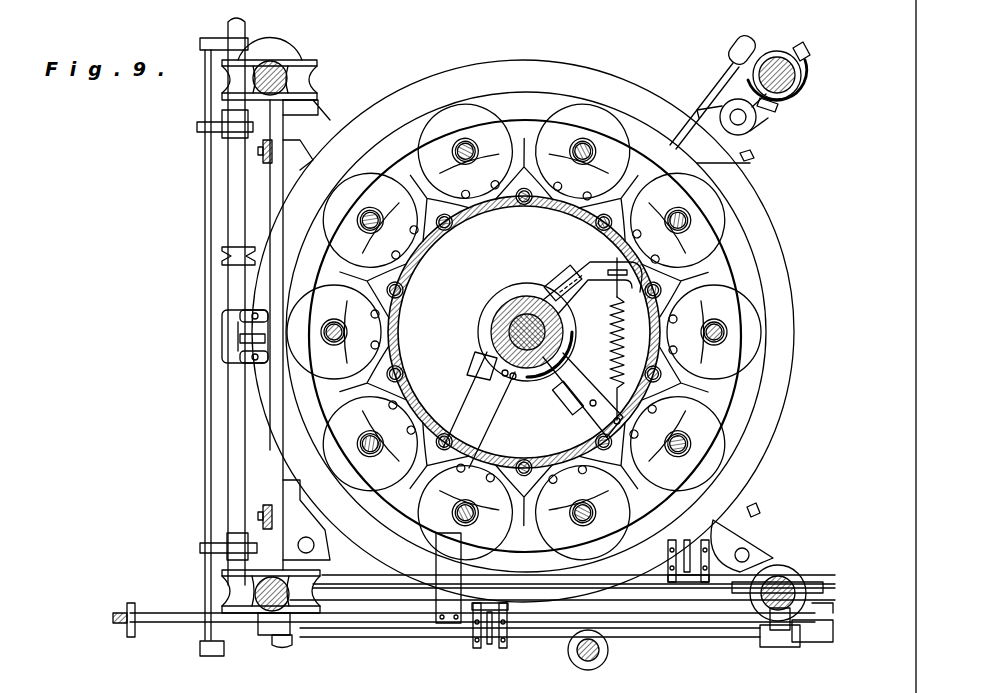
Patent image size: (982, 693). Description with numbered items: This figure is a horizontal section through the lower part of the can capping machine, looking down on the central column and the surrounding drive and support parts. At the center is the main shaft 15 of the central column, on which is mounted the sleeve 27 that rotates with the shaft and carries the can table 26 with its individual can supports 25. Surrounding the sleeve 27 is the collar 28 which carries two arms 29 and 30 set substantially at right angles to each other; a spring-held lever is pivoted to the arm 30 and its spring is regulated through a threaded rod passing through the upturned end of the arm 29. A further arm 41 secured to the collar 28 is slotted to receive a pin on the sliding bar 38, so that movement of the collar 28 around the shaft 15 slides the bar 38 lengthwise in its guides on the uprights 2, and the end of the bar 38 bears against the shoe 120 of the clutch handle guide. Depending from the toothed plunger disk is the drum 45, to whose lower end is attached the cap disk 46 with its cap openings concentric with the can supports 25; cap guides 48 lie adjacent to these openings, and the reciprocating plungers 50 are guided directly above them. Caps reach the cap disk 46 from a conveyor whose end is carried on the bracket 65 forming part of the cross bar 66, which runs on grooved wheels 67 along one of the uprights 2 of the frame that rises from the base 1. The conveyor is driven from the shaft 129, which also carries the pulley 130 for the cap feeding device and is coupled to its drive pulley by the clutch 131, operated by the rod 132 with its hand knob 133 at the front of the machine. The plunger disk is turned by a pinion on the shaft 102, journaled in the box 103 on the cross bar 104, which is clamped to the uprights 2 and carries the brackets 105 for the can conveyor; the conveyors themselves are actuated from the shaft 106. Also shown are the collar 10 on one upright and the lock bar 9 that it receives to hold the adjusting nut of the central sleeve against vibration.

The base 1 is at (523, 331).
The uprights 2 is at (256, 78).
The lock bar 9 is at (705, 84).
The collar 10 is at (777, 56).
The main shaft 15 is at (497, 318).
The can supports 25 is at (524, 332).
The can table 26 is at (525, 324).
The sleeve 27 is at (495, 340).
The collar 28 is at (540, 298).
The arm 29 is at (590, 276).
The arm 30 is at (577, 386).
The sliding bar 38 is at (197, 618).
The arm 41 is at (475, 436).
The drum 45 is at (505, 212).
The cap disk 46 is at (730, 310).
The cap guides 48 is at (524, 425).
The plungers 50 is at (465, 140).
The bracket 65 is at (228, 323).
The cross bar 66 is at (277, 203).
The grooved wheels 67 is at (305, 60).
The shaft 102 is at (600, 652).
The box 103 is at (578, 662).
The cross bar 104 is at (694, 596).
The brackets 105 is at (497, 640).
The shaft 106 is at (437, 630).
The shoe 120 is at (132, 604).
The shaft 129 is at (235, 157).
The pulley 130 is at (224, 256).
The clutch 131 is at (220, 42).
The rod 132 is at (206, 440).
The hand knob 133 is at (213, 658).